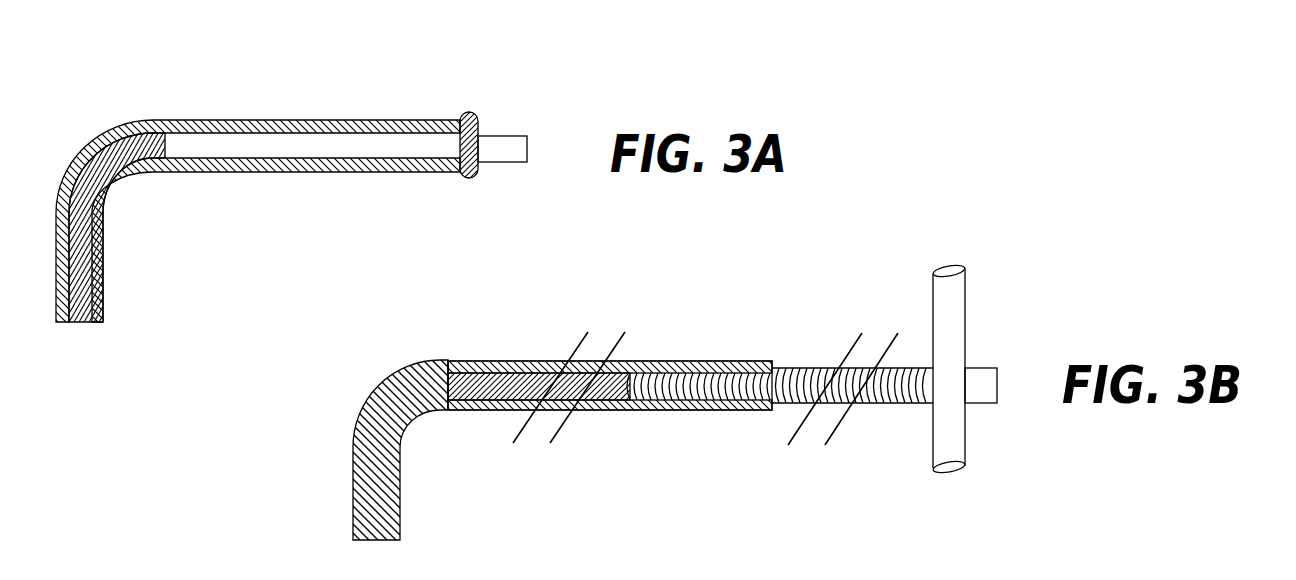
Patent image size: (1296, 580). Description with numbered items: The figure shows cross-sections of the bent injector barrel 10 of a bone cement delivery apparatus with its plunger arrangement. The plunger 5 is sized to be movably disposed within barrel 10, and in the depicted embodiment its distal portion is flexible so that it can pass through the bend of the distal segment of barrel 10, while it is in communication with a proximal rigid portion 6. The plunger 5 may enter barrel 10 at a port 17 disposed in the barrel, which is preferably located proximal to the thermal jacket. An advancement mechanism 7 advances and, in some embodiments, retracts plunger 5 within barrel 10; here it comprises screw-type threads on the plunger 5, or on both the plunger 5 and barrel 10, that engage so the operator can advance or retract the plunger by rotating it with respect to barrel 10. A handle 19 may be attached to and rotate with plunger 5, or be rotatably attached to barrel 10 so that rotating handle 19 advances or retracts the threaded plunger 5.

In FIG. 3A, the plunger 5 is at (153, 118).
In FIG. 3B, the plunger 5 is at (532, 359).
In FIG. 3A, the proximal rigid portion 6 is at (498, 135).
In FIG. 3B, the proximal rigid portion 6 is at (793, 367).
In FIG. 3B, the advancement mechanism 7 is at (752, 411).
In FIG. 3A, the injector barrel 10 is at (297, 118).
In FIG. 3B, the injector barrel 10 is at (695, 360).
In FIG. 3A, the port 17 is at (468, 180).
In FIG. 3B, the handle 19 is at (967, 300).